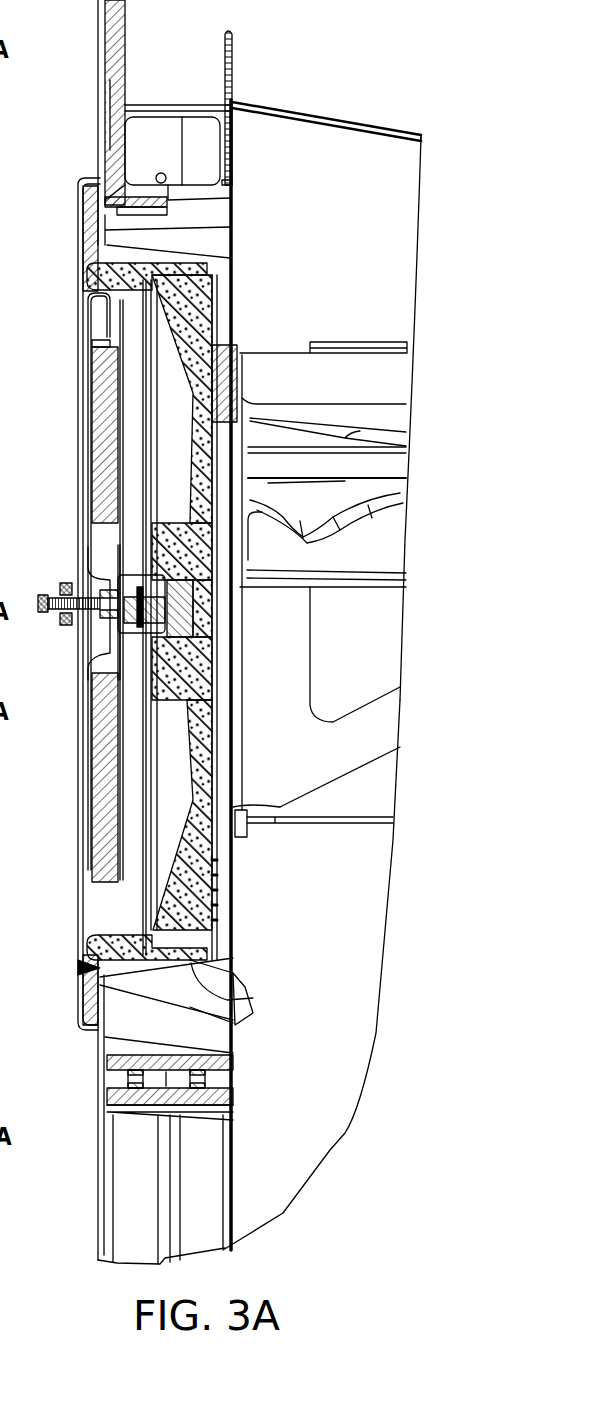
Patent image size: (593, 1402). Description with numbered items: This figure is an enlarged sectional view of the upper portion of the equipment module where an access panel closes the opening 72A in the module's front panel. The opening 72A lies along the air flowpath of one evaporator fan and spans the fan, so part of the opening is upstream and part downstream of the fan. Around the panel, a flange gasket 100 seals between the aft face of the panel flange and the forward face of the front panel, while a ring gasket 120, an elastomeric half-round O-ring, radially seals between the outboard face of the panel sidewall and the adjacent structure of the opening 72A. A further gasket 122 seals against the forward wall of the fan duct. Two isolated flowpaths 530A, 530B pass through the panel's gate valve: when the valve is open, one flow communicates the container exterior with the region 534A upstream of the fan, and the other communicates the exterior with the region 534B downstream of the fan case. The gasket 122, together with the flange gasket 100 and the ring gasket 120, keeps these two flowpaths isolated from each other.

The flange gasket 100 is at (90, 977).
The opening 72A is at (83, 968).
The gasket 122 is at (238, 374).
The ring gasket 120 is at (253, 998).
The flowpath 530A is at (40, 400).
The flowpath 530B is at (40, 812).
The region upstream of the fan 534A is at (345, 240).
The region downstream of the fan case 534B is at (343, 881).